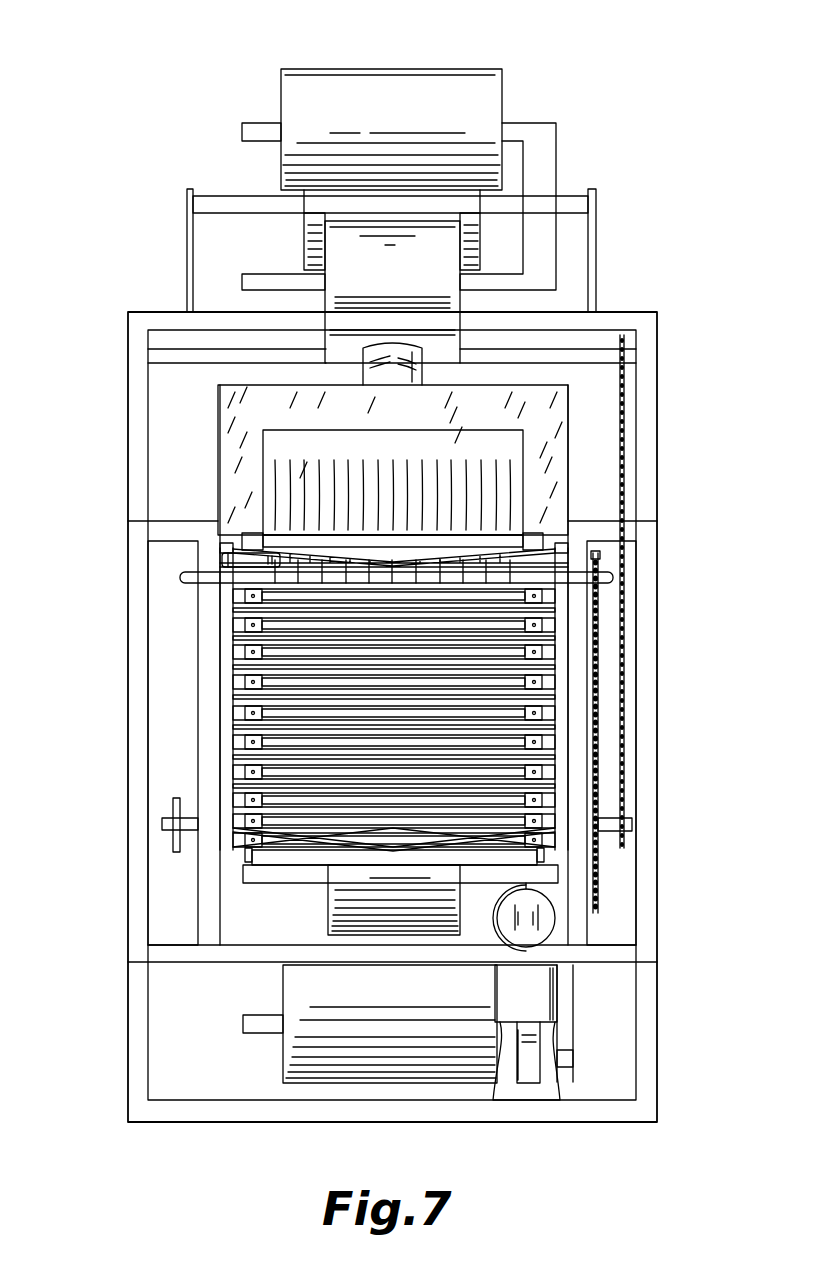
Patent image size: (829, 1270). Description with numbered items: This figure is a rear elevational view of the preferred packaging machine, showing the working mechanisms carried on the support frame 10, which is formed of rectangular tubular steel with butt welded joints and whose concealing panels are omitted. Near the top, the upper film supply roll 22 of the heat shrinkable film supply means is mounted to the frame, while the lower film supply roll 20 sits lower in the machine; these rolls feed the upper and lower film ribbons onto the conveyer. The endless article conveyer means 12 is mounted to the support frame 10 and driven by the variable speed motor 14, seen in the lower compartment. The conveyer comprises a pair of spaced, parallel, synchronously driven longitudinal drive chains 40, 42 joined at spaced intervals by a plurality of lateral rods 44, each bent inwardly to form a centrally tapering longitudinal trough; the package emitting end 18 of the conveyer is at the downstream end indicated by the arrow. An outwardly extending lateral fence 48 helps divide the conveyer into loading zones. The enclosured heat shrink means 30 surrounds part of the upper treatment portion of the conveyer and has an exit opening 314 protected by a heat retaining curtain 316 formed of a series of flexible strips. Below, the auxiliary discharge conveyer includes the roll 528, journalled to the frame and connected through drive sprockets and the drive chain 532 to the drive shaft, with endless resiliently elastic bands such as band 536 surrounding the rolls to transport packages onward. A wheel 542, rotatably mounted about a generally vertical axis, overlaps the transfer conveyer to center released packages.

The support frame 10 is at (643, 418).
The upper film supply roll 22 is at (353, 265).
The enclosured heat shrink means 30 is at (557, 413).
The exit opening 314 is at (267, 492).
The heat retaining curtain 316 is at (300, 457).
The lateral fence 48 is at (507, 542).
The wheel 542 is at (213, 560).
The roll 528 is at (180, 574).
The endless resiliently elastic band 536 is at (298, 575).
The longitudinal drive chain 40 is at (230, 702).
The endless article conveyer means 12 is at (507, 610).
The longitudinal drive chain 42 is at (558, 700).
The lateral rod 44 is at (493, 758).
The package emitting end 18 is at (690, 684).
The drive chain 532 is at (598, 872).
The lower film supply roll 20 is at (328, 903).
The variable speed motor 14 is at (535, 1003).